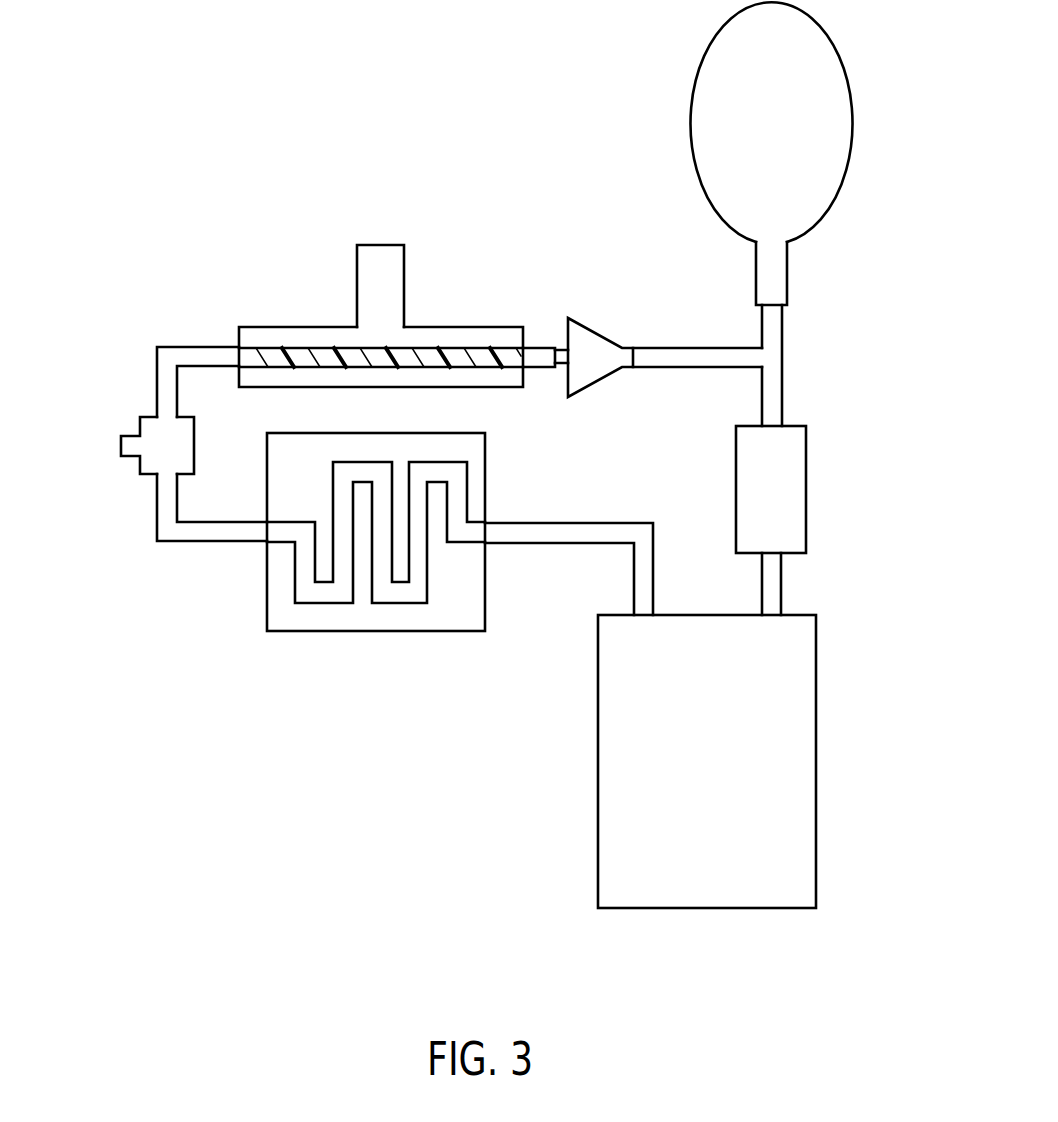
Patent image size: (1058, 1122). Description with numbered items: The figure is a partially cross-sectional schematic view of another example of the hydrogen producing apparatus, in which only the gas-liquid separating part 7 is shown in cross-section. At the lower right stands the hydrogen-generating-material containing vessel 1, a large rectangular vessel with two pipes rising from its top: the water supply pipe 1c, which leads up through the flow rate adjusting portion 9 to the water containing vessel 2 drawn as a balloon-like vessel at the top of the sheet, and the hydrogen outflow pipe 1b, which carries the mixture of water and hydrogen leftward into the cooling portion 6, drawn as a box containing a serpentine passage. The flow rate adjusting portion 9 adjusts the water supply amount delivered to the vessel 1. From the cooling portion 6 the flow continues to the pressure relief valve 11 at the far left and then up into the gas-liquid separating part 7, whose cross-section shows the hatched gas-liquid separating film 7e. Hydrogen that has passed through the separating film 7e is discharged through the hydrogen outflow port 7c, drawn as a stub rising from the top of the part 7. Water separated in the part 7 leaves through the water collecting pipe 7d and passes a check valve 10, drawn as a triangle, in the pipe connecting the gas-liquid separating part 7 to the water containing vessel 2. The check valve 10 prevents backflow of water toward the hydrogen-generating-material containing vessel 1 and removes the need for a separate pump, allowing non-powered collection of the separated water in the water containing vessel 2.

The hydrogen-generating-material containing vessel 1 is at (795, 764).
The hydrogen outflow pipe 1b is at (640, 581).
The water supply pipe 1c is at (775, 591).
The water containing vessel 2 is at (833, 119).
The cooling portion 6 is at (375, 620).
The gas-liquid separating part 7 is at (405, 279).
The hydrogen outflow port 7c is at (381, 260).
The water collecting pipe 7d is at (538, 359).
The gas-liquid separating film 7e is at (450, 349).
The flow rate adjusting portion 9 is at (783, 488).
The check valve 10 is at (598, 334).
The pressure relief valve 11 is at (128, 448).